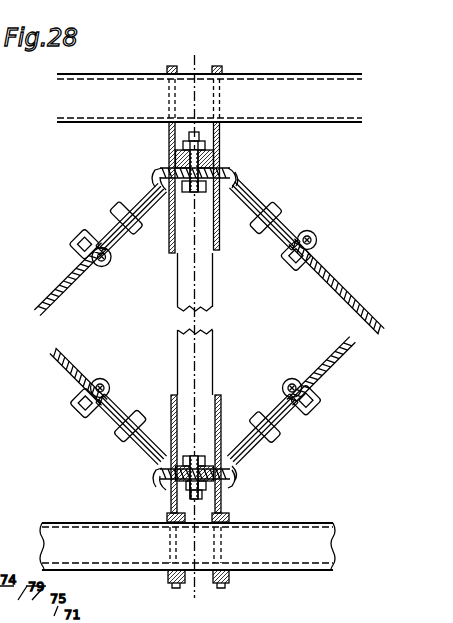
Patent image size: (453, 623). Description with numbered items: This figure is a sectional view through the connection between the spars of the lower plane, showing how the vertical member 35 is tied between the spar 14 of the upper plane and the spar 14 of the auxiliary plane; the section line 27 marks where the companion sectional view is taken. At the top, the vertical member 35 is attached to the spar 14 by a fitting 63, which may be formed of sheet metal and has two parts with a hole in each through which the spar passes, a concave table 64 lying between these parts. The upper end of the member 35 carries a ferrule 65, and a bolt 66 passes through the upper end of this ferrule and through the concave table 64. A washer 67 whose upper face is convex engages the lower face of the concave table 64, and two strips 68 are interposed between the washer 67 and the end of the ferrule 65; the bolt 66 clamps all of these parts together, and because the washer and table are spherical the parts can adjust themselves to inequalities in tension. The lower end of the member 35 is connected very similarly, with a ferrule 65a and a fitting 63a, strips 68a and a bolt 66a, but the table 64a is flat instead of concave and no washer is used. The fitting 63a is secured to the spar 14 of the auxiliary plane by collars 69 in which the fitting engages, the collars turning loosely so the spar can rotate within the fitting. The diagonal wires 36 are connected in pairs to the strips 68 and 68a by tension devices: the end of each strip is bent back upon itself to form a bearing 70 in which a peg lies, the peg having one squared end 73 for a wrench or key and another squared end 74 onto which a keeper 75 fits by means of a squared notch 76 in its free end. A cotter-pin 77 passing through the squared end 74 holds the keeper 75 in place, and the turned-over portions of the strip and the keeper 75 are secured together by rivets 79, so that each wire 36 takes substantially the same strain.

The spar 14 is at (315, 79).
The section line 27 is at (197, 329).
The vertical member 35 is at (221, 348).
The diagonal wires 36 is at (343, 298).
The fitting 63 is at (221, 143).
The fitting 63a is at (225, 508).
The concave table 64 is at (175, 158).
The table 64a is at (175, 487).
The ferrule 65 is at (170, 222).
The ferrule 65a is at (221, 412).
The bolt 66 is at (220, 195).
The bolt 66a is at (244, 456).
The washer 67 is at (165, 176).
The strips 68 is at (238, 183).
The strips 68a is at (160, 472).
The collars 69 is at (230, 578).
The bearing 70 is at (112, 260).
The squared end 73 is at (99, 267).
The squared end 74 is at (286, 262).
The keeper 75 is at (296, 270).
The squared notch 76 is at (70, 250).
The cotter-pin 77 is at (82, 236).
The rivets 79 is at (277, 212).